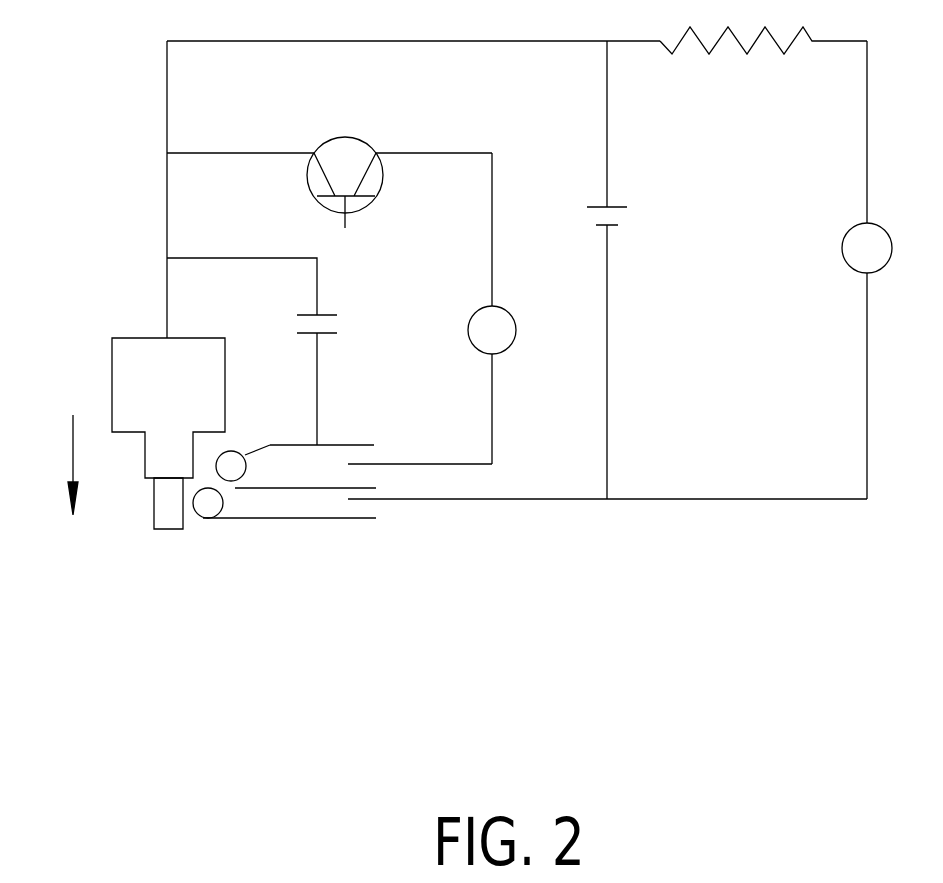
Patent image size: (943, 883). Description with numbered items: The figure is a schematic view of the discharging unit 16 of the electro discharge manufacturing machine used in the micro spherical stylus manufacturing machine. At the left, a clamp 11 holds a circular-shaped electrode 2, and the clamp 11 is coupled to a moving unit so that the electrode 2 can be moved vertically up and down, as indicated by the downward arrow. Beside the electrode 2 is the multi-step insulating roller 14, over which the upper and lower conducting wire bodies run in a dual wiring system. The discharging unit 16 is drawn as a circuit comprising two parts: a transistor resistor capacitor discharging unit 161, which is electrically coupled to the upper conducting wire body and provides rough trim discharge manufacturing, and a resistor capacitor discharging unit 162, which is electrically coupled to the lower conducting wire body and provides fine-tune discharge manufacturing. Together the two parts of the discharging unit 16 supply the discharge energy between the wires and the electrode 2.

The circular-shaped electrode 2 is at (163, 500).
The clamp 11 is at (137, 353).
The insulating roller 14 is at (262, 576).
The discharging unit 16 is at (620, 423).
The transistor resistor capacitor discharging unit 161 is at (493, 423).
The resistor capacitor discharging unit 162 is at (868, 418).